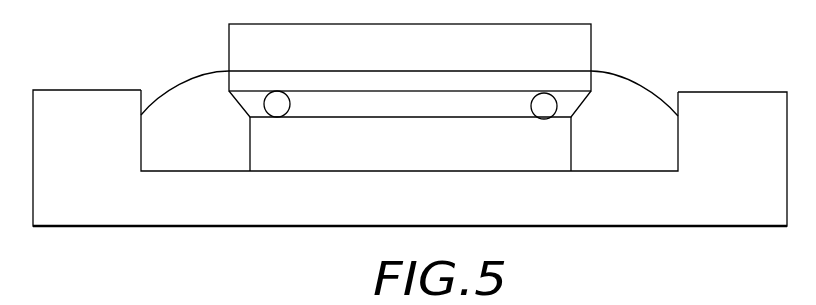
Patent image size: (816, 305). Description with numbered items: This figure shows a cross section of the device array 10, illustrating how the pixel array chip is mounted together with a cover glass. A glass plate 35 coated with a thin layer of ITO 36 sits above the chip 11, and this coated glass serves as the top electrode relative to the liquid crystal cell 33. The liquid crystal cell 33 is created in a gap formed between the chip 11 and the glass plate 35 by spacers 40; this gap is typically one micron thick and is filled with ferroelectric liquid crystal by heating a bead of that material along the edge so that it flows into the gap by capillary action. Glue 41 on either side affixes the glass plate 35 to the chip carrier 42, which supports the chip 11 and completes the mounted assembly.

The device array 10 is at (138, 61).
The chip 11 is at (523, 160).
The liquid crystal cell 33 is at (468, 105).
The glass plate 35 is at (446, 61).
The thin layer of ITO 36 is at (578, 82).
The spacers 40 is at (277, 104).
The glue 41 is at (207, 151).
The chip carrier 42 is at (566, 218).